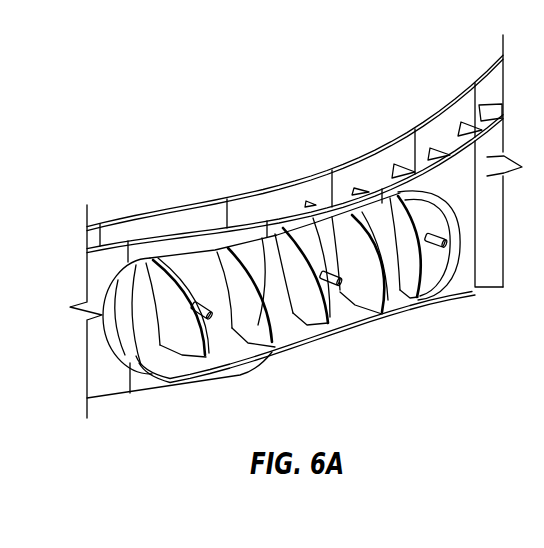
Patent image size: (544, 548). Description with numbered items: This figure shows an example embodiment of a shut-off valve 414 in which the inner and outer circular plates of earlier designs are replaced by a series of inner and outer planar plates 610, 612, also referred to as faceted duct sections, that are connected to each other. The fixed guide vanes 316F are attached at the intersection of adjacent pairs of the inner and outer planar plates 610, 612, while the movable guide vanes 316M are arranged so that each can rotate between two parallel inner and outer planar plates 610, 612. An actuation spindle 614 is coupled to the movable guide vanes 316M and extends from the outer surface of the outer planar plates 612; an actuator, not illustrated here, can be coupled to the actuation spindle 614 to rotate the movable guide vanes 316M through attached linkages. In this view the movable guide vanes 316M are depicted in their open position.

The shut-off valve 414 is at (110, 70).
The inner planar plates 610 is at (396, 137).
The outer planar plates 612 is at (142, 393).
The actuation spindle 614 is at (236, 340).
The fixed guide vanes 316F is at (273, 320).
The movable guide vanes 316M is at (335, 315).